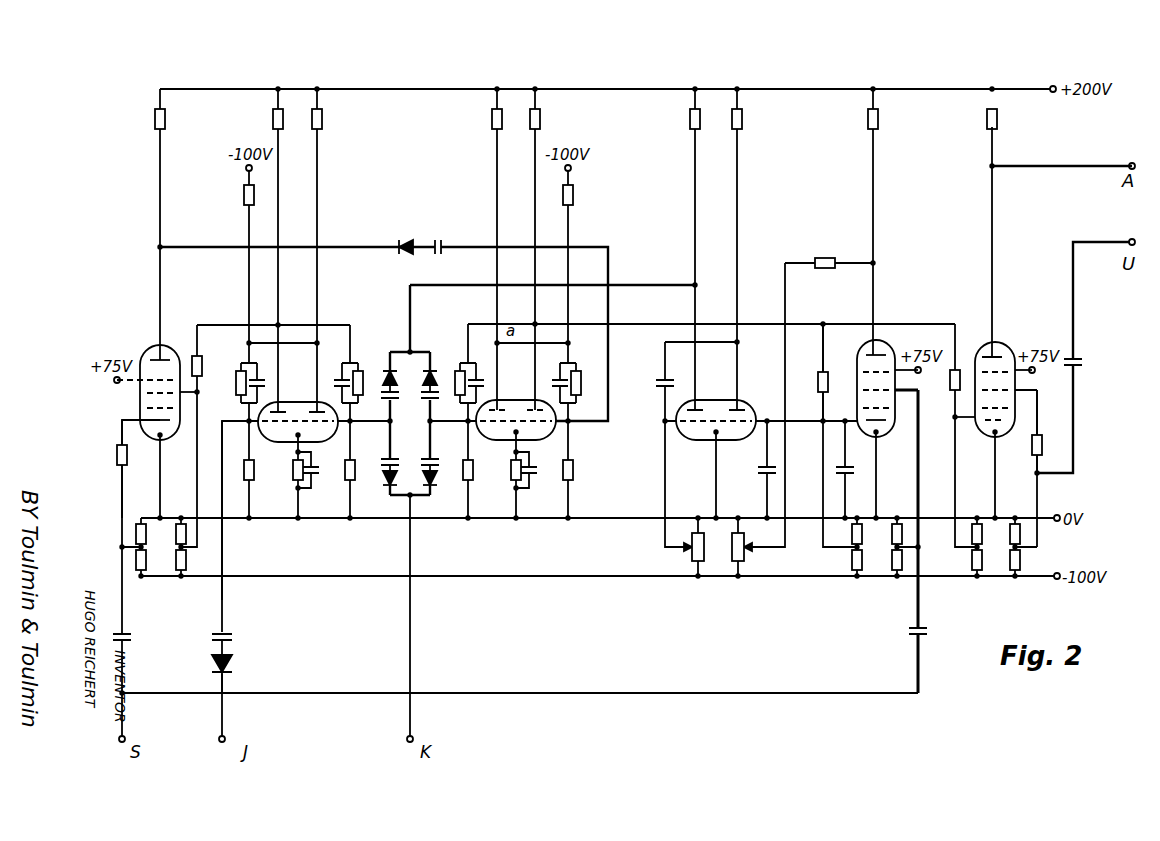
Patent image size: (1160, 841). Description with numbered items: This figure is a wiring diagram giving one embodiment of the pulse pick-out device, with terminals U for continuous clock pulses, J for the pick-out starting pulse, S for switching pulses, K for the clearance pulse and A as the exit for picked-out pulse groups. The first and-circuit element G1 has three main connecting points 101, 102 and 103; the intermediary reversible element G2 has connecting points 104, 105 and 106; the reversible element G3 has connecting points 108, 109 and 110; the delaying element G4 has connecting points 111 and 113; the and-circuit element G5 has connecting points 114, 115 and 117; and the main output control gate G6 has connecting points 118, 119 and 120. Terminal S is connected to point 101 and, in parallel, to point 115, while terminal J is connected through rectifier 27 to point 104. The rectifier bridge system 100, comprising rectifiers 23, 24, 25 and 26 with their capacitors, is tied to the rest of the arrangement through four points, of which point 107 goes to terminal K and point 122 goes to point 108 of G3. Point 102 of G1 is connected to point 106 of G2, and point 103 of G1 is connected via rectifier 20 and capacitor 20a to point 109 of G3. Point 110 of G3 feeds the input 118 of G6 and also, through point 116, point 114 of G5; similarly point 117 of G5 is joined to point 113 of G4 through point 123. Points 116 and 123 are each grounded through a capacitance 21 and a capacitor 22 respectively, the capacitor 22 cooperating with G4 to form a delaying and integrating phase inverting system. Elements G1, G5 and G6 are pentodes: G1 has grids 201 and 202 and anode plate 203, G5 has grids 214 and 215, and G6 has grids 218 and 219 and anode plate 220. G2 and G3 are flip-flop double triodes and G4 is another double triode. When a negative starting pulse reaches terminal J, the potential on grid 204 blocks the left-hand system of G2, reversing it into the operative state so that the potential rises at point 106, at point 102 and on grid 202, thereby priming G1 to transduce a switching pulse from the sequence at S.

The rectifier 20 is at (415, 235).
The capacitor 20a is at (443, 244).
The capacitance 21 is at (853, 471).
The capacitor 22 is at (759, 471).
The rectifier 23 is at (389, 376).
The rectifier 24 is at (431, 376).
The rectifier 25 is at (384, 479).
The rectifier 26 is at (434, 479).
The rectifier 27 is at (231, 665).
The rectifier bridge system 100 is at (408, 390).
The connecting point 101 is at (128, 460).
The connecting point 102 is at (191, 375).
The connecting point 103 is at (160, 250).
The connecting point 104 is at (249, 421).
The connecting point 105 is at (349, 421).
The connecting point 106 is at (273, 315).
The point 107 is at (418, 505).
The connecting point 108 is at (468, 421).
The connecting point 109 is at (569, 421).
The connecting point 110 is at (537, 324).
The connecting point 111 is at (695, 285).
The connecting point 113 is at (770, 411).
The connecting point 114 is at (841, 411).
The connecting point 115 is at (912, 379).
The point 116 is at (823, 424).
The connecting point 117 is at (873, 263).
The input 118 is at (955, 417).
The connecting point 119 is at (1033, 379).
The connecting point 120 is at (992, 168).
The point 122 is at (737, 342).
The point 123 is at (788, 417).
The grid 201 is at (170, 426).
The grid 202 is at (148, 394).
The anode plate 203 is at (171, 341).
The grid 204 is at (285, 418).
The grid 214 is at (893, 424).
The grid 215 is at (860, 380).
The grid 218 is at (1000, 440).
The grid 219 is at (1035, 400).
The anode plate 220 is at (1003, 242).
The and-circuit element G1 is at (152, 446).
The intermediary reversible element G2 is at (280, 444).
The reversible element G3 is at (498, 442).
The delaying element G4 is at (698, 442).
The and-circuit element G5 is at (892, 440).
The main output control gate G6 is at (985, 440).